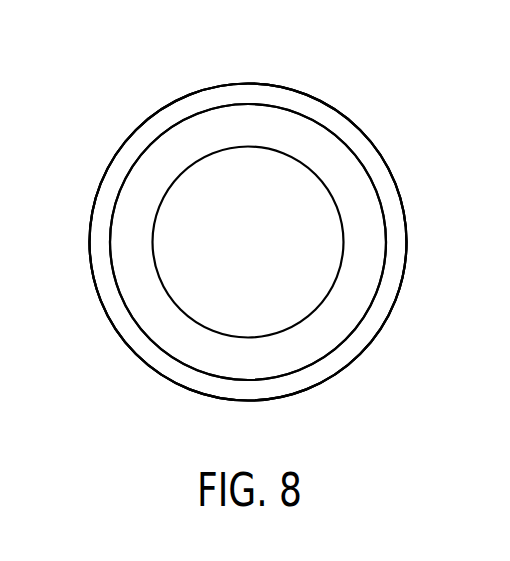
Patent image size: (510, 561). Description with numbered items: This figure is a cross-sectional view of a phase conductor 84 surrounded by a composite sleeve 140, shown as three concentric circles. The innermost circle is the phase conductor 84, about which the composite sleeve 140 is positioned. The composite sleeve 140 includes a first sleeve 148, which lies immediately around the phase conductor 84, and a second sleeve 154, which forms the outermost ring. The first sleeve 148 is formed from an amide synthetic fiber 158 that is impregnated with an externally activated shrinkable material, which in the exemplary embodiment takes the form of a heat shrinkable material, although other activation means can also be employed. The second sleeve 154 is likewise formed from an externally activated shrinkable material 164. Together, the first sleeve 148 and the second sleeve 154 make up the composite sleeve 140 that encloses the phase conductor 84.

The composite sleeve 140 is at (87, 67).
The first sleeve 148 is at (161, 121).
The second sleeve 154 is at (348, 103).
The amide synthetic fiber 158 is at (177, 360).
The externally activated shrinkable material 164 is at (265, 83).
The phase conductor 84 is at (321, 213).